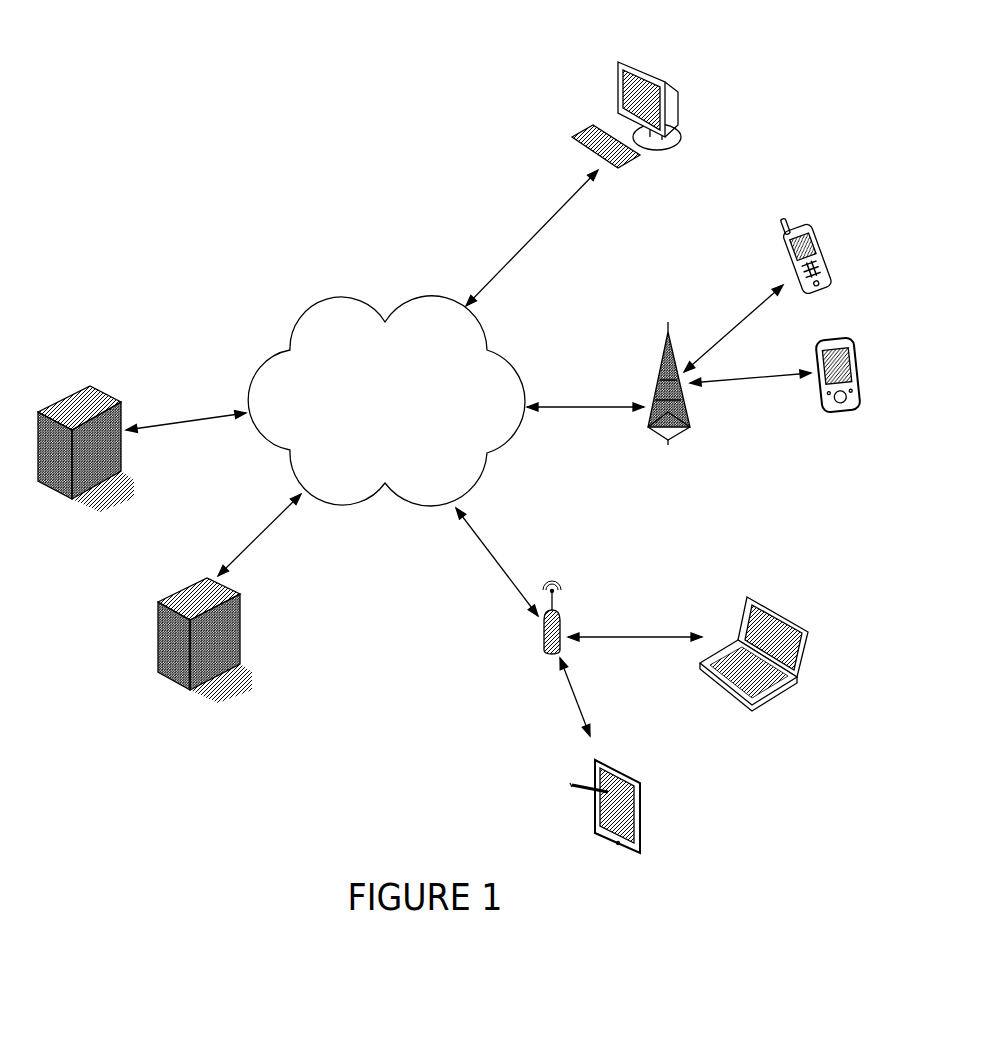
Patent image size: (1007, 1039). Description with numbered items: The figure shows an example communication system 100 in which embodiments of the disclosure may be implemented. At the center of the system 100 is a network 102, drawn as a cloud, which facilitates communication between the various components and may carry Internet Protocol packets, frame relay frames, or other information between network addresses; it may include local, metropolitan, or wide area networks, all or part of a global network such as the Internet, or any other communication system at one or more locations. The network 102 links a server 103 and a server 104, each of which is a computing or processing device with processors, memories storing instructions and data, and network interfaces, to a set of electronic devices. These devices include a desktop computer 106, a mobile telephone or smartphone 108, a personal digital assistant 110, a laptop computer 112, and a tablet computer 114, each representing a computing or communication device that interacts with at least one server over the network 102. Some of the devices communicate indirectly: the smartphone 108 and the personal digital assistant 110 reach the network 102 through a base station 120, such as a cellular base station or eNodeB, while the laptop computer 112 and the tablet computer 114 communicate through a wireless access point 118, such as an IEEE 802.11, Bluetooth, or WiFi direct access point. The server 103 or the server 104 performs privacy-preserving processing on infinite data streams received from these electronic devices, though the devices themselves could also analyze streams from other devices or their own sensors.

The communication system 100 is at (214, 164).
The network 102 is at (303, 319).
The server 103 is at (172, 593).
The server 104 is at (52, 400).
The desktop computer 106 is at (615, 62).
The mobile telephone or smartphone 108 is at (828, 240).
The personal digital assistant (PDA) 110 is at (858, 345).
The laptop computer 112 is at (812, 640).
The tablet computer 114 is at (644, 800).
The wireless access point 118 is at (563, 622).
The base station 120 is at (696, 427).